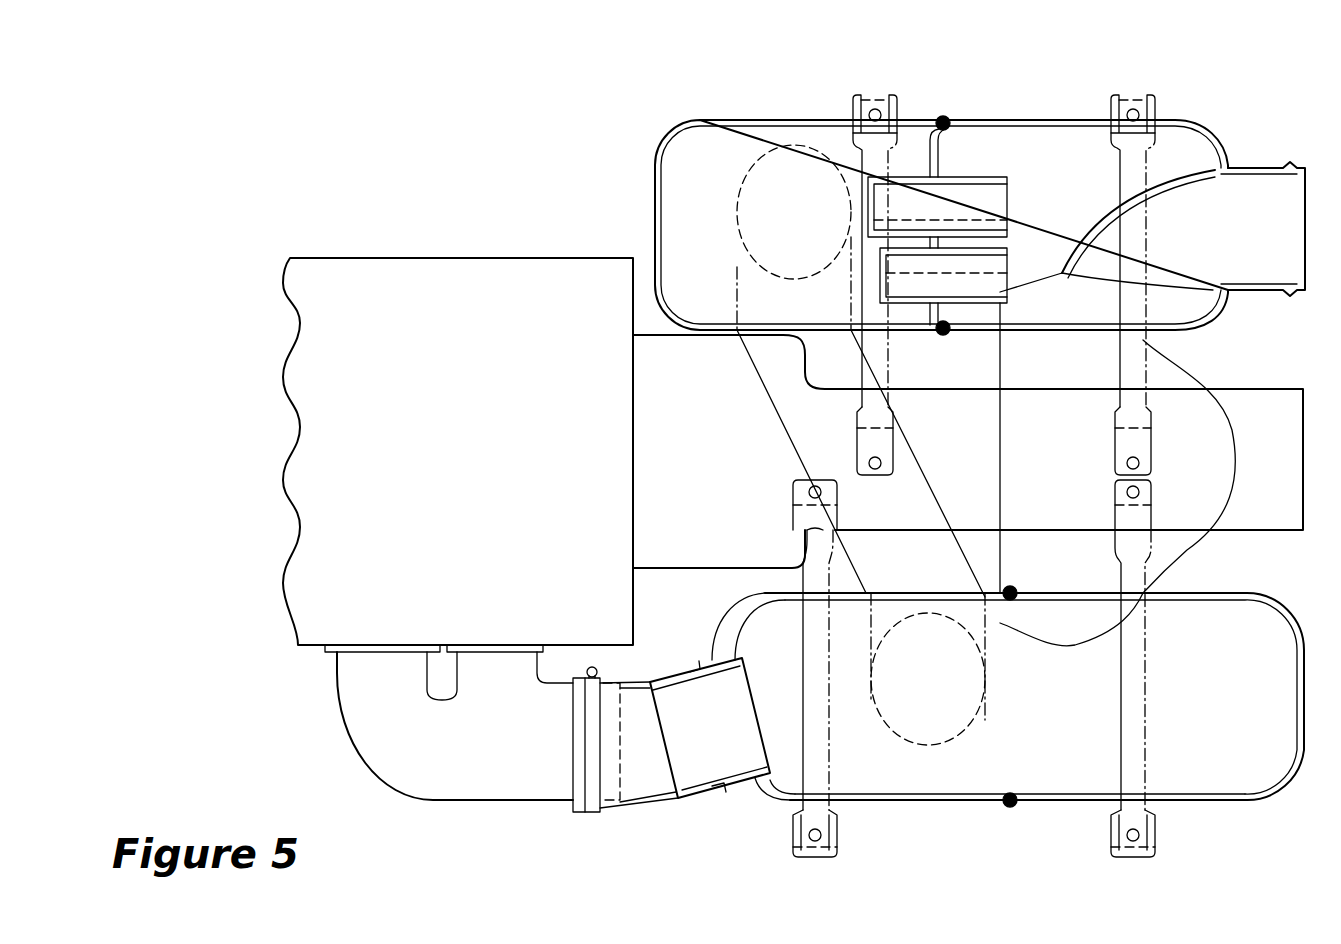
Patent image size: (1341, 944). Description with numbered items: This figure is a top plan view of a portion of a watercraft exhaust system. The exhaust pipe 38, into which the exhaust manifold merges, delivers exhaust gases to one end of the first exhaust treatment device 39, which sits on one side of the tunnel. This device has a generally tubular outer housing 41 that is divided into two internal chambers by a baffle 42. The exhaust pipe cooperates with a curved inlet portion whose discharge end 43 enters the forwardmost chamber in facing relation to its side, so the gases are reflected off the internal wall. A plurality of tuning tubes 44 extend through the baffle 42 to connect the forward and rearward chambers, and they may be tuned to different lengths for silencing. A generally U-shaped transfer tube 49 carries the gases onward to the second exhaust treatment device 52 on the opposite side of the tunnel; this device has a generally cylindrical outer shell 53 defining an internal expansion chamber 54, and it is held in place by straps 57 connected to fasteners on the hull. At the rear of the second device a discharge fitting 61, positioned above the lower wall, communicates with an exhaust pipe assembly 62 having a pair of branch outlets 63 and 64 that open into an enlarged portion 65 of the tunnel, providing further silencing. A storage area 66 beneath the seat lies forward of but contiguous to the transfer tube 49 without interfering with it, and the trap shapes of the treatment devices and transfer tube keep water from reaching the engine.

The exhaust pipe 38 is at (1274, 165).
The first exhaust treatment device 39 is at (852, 110).
The outer housing 41 is at (735, 120).
The baffle 42 is at (925, 147).
The discharge end 43 is at (1202, 288).
The tuning tubes 44 is at (1033, 307).
The transfer tube 49 is at (755, 374).
The second exhaust treatment device 52 is at (922, 806).
The outer shell 53 is at (1050, 808).
The expansion chamber 54 is at (1075, 728).
The straps 57 is at (788, 820).
The discharge fitting 61 is at (720, 658).
The exhaust pipe assembly 62 is at (492, 783).
The branch outlet 63 is at (334, 672).
The branch outlet 64 is at (543, 665).
The enlarged portion of the tunnel 65 is at (513, 282).
The storage area 66 is at (1188, 552).